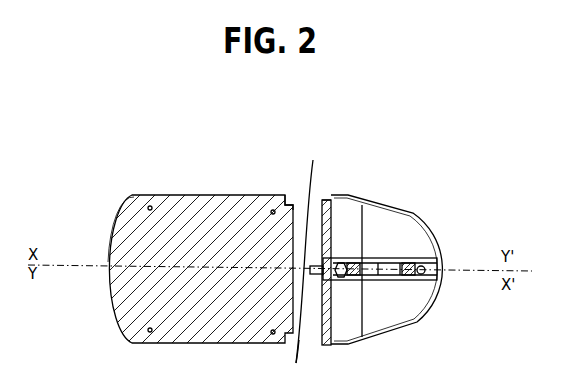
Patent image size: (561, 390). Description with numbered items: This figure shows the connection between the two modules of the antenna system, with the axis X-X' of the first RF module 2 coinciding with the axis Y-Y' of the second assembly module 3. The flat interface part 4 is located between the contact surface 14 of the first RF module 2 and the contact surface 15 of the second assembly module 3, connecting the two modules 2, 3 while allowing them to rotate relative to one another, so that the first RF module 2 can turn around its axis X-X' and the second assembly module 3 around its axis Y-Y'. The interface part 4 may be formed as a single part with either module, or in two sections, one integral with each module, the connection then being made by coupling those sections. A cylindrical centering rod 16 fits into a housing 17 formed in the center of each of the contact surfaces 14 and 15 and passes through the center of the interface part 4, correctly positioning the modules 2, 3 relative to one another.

The first RF module 2 is at (115, 326).
The second assembly module 3 is at (418, 322).
The flat interface part 4 is at (325, 345).
The contact surface 14 is at (293, 210).
The contact surface 15 is at (326, 198).
The centering rod 16 is at (296, 362).
The housing 17 is at (310, 254).